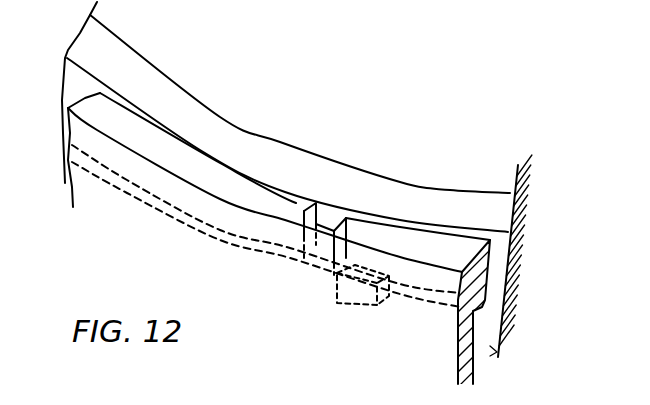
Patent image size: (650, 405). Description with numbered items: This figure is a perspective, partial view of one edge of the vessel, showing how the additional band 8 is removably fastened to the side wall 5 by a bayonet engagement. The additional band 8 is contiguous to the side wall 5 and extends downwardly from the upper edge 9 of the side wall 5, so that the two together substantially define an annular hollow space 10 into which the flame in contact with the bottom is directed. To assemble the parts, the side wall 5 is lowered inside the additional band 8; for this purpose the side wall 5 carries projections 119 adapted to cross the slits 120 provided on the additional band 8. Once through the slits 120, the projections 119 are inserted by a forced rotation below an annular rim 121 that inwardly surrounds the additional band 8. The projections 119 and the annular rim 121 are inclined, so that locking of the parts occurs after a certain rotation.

The additional band 8 is at (110, 204).
The upper edge 9 is at (308, 175).
The slits 120 is at (327, 222).
The projections 119 is at (358, 291).
The annular rim 121 is at (477, 270).
The side wall 5 is at (507, 300).
The annular hollow space 10 is at (497, 352).